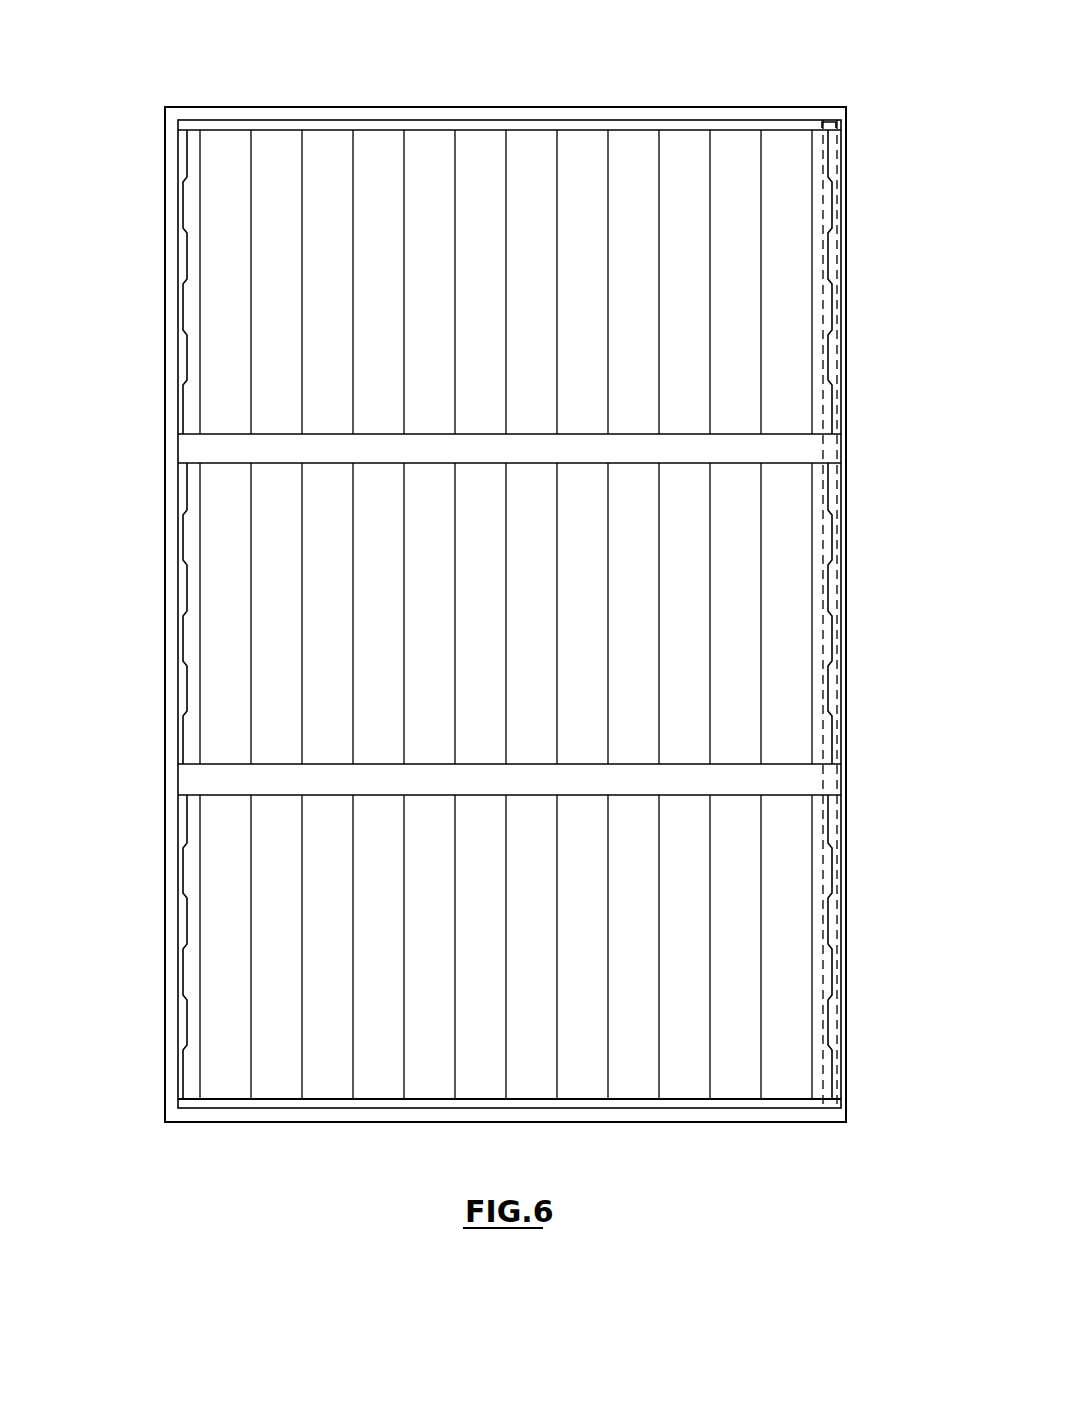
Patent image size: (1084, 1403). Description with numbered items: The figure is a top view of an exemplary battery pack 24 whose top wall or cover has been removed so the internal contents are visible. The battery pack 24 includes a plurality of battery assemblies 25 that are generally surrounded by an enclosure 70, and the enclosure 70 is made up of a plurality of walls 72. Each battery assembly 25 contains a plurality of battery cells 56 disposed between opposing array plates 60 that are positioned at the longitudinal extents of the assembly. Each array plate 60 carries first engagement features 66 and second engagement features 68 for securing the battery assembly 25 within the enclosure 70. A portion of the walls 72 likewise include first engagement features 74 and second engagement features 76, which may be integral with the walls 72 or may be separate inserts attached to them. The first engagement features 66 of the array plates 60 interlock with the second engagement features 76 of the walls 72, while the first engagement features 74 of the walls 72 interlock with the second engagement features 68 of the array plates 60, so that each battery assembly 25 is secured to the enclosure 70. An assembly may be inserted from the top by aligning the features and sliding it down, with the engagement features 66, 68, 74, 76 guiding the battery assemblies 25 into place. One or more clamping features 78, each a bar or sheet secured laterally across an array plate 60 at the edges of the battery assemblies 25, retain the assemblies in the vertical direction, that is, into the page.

The battery pack 24 is at (678, 72).
The battery assembly 25 is at (780, 273).
The battery cell 56 is at (272, 142).
The array plate 60 is at (187, 135).
The first engagement feature 66 is at (188, 158).
The second engagement feature 68 is at (184, 207).
The enclosure 70 is at (745, 107).
The wall 72 is at (445, 107).
The first engagement feature 74 is at (183, 212).
The second engagement feature 76 is at (187, 156).
The clamping feature 78 is at (836, 124).